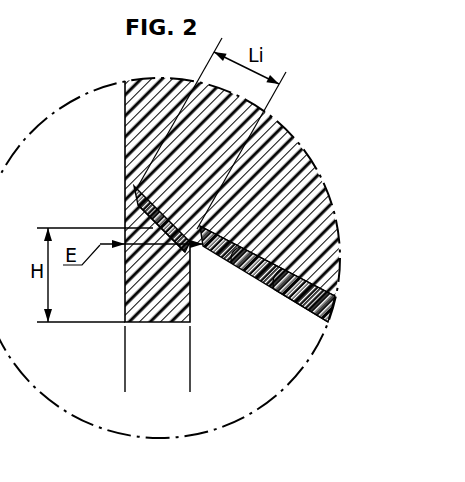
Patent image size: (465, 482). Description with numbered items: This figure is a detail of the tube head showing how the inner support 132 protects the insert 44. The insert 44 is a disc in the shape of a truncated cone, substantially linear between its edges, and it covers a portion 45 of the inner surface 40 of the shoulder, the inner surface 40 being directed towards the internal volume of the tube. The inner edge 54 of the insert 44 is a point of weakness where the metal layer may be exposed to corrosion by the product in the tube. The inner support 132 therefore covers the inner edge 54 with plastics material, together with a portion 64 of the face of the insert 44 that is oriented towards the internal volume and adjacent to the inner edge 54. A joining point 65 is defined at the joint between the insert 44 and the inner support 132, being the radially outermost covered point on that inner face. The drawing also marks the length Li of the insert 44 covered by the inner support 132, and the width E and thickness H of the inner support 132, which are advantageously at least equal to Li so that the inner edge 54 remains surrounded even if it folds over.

The inner support 132 is at (125, 282).
The inner surface 40 is at (277, 283).
The joining point 65 is at (210, 228).
The portion of the inner surface of the shoulder 45 is at (236, 262).
The insert 44 is at (294, 304).
The inner edge 54 is at (133, 188).
The portion of the face of the insert 64 is at (143, 220).